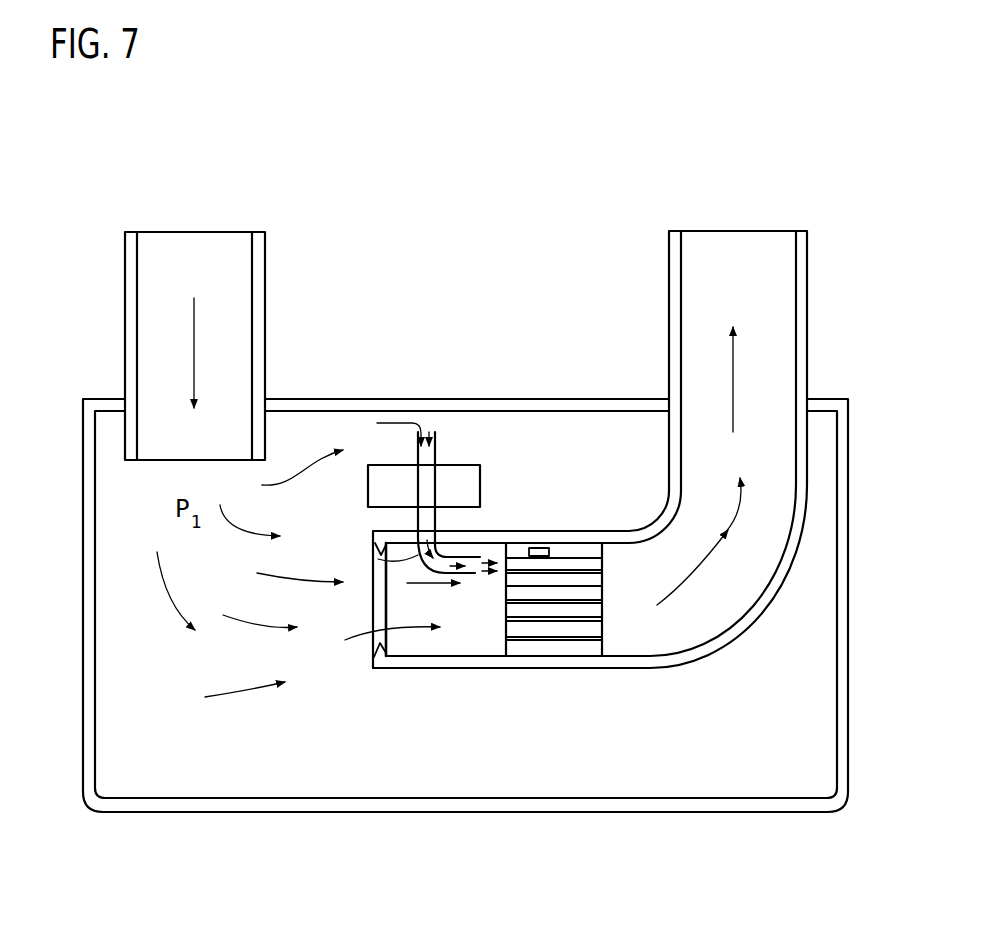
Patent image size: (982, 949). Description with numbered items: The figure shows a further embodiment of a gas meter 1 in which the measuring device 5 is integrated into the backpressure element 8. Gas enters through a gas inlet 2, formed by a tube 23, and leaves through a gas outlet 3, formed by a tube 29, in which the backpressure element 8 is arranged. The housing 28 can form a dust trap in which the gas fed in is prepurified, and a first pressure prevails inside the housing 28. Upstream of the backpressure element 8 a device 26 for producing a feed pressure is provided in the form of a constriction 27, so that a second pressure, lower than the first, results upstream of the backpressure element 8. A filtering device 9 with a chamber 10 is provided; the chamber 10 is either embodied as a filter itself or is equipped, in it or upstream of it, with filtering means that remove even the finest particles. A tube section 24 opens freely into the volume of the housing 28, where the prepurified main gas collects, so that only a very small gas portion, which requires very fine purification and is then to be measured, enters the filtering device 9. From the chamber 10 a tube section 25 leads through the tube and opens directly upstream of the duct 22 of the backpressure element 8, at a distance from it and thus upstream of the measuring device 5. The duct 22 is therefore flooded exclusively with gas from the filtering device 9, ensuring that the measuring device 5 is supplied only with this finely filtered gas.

The gas meter 1 is at (415, 168).
The gas inlet 2 is at (195, 222).
The gas outlet 3 is at (729, 224).
The measuring device 5 is at (540, 546).
The backpressure element 8 is at (542, 650).
The filtering device 9 is at (490, 477).
The chamber 10 is at (472, 463).
The duct 22 is at (578, 563).
The tube 23 is at (266, 308).
The tube section 24 is at (437, 447).
The tube section 25 is at (377, 553).
The device for producing a feed pressure 26 is at (383, 675).
The constriction 27 is at (380, 658).
The housing 28 is at (582, 398).
The tube 29 is at (668, 302).